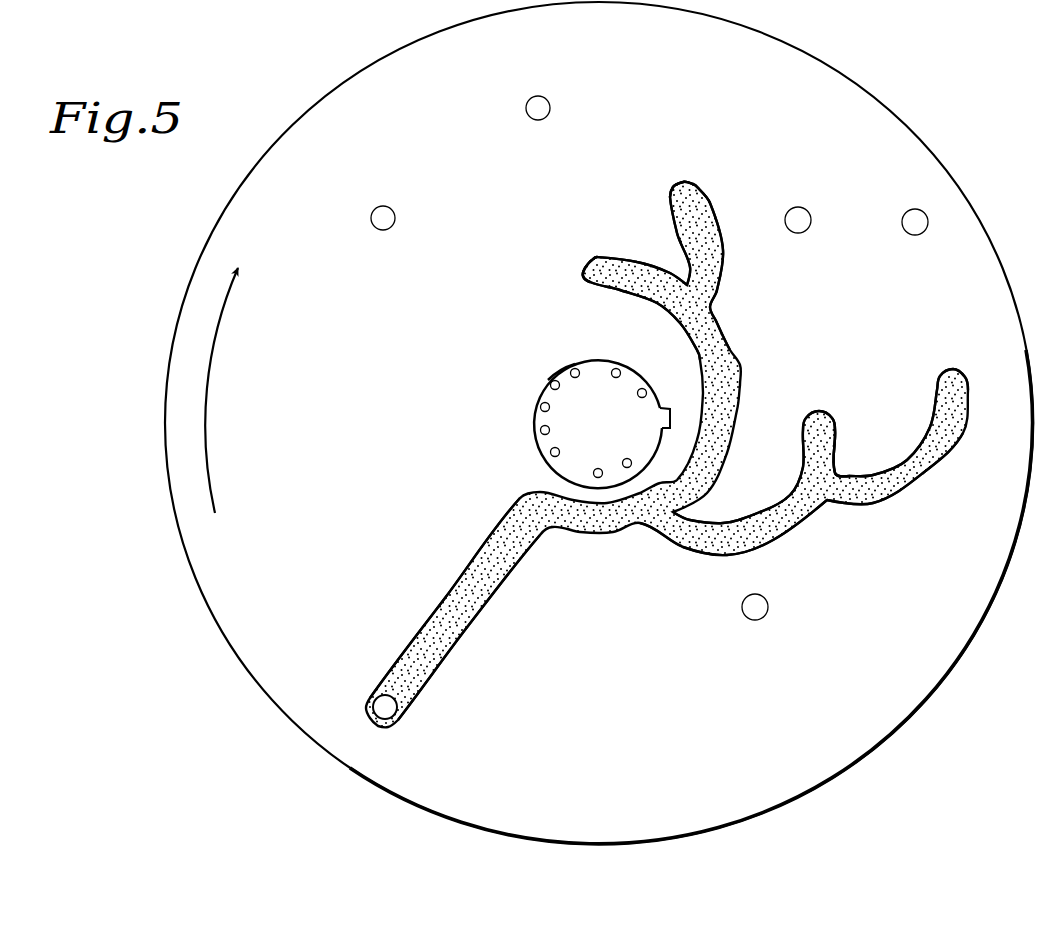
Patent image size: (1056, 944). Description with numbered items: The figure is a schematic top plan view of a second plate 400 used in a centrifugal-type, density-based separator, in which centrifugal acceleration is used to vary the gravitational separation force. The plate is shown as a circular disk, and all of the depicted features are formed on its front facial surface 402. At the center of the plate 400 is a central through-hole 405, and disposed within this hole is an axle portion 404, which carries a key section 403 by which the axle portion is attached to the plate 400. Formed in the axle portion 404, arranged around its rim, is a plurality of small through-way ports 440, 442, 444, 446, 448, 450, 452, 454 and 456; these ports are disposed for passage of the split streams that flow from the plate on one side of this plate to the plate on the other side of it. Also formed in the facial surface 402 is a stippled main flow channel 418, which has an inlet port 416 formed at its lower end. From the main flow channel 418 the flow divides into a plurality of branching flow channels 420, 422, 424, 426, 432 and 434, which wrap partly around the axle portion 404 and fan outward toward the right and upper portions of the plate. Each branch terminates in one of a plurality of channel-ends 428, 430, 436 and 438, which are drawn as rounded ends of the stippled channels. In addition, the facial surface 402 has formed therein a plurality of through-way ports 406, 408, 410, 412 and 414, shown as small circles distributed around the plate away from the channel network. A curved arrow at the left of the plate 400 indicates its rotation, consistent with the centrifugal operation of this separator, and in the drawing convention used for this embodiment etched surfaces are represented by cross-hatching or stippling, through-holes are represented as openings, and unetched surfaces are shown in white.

The second plate 400 is at (905, 82).
The front facial surface 402 is at (931, 601).
The key section 403 is at (670, 412).
The axle portion 404 is at (552, 368).
The central through-hole 405 is at (586, 350).
The through-way port 406 is at (391, 210).
The through-way port 408 is at (550, 106).
The through-way port 410 is at (815, 197).
The through-way port 412 is at (927, 197).
The through-way port 414 is at (742, 604).
The inlet port 416 is at (372, 700).
The main flow channel 418 is at (455, 580).
The branching flow channel 420 is at (783, 533).
The branching flow channel 422 is at (708, 467).
The branching flow channel 424 is at (833, 448).
The branching flow channel 426 is at (925, 473).
The channel-end 428 is at (820, 418).
The channel-end 430 is at (950, 368).
The branching flow channel 432 is at (655, 263).
The branching flow channel 434 is at (722, 247).
The channel-end 436 is at (593, 258).
The channel-end 438 is at (677, 185).
The through-way port 440 is at (626, 468).
The through-way port 442 is at (594, 473).
The through-way port 444 is at (550, 451).
The through-way port 446 is at (540, 430).
The through-way port 448 is at (540, 406).
The through-way port 450 is at (550, 385).
The through-way port 452 is at (571, 369).
The through-way port 454 is at (616, 368).
The through-way port 456 is at (642, 388).